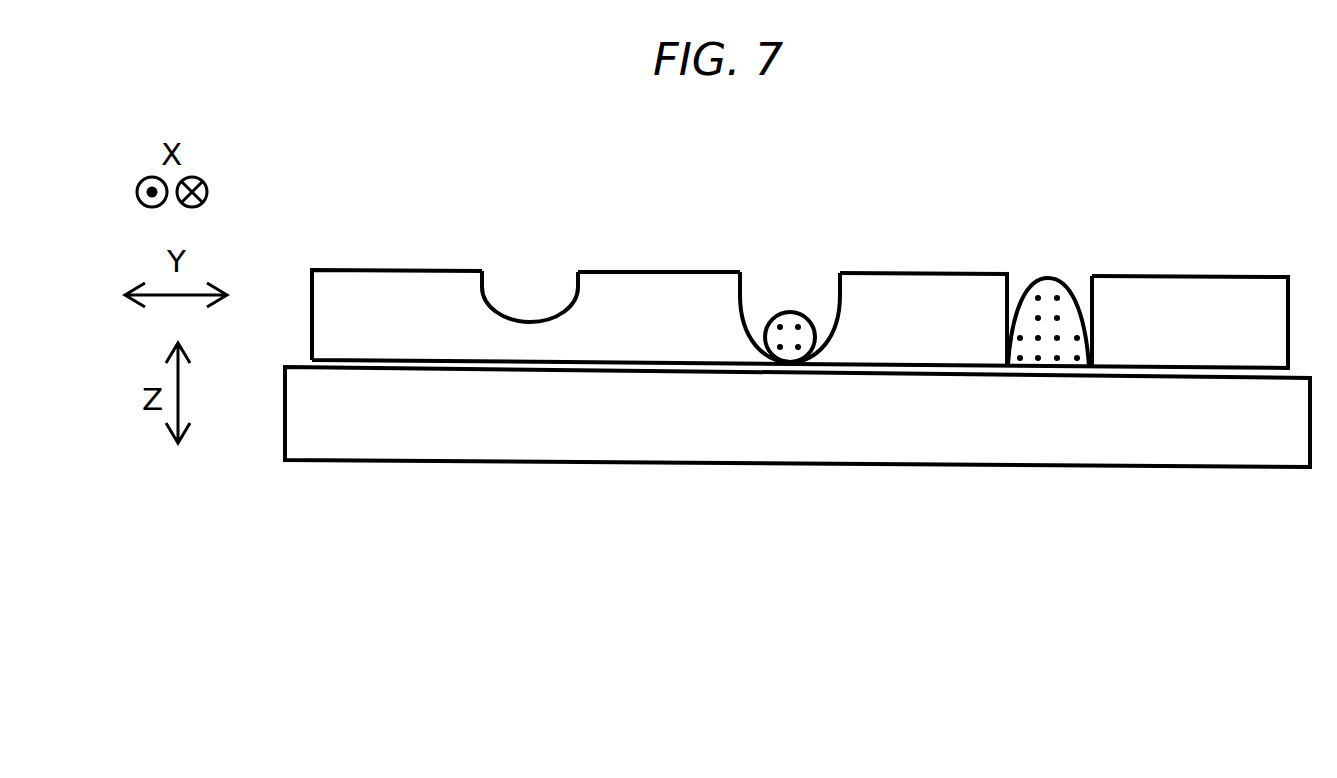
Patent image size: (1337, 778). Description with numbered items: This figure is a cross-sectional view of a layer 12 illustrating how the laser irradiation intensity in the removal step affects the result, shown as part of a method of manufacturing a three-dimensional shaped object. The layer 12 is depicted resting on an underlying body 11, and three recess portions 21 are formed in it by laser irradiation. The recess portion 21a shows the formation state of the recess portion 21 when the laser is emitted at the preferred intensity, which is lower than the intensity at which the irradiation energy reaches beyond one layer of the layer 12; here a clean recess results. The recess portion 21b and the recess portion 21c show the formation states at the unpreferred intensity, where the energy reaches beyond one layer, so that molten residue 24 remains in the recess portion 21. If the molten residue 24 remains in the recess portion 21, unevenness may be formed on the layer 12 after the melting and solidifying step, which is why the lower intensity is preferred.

The substrate 11 is at (1135, 440).
The layer 12 is at (1195, 307).
The recess portion 21 is at (728, 231).
The recess portion 21a is at (522, 280).
The recess portion 21b is at (782, 277).
The recess portion 21c is at (1028, 273).
The molten residue 24 is at (790, 356).